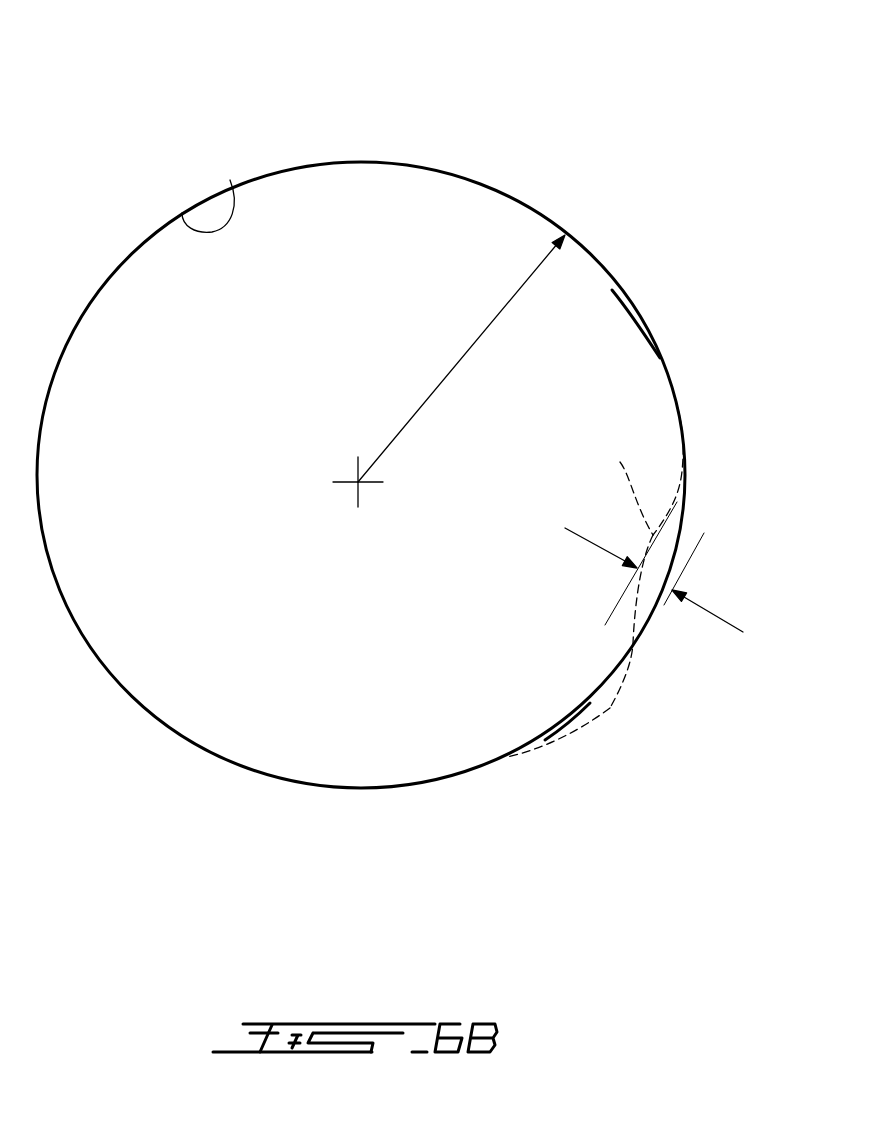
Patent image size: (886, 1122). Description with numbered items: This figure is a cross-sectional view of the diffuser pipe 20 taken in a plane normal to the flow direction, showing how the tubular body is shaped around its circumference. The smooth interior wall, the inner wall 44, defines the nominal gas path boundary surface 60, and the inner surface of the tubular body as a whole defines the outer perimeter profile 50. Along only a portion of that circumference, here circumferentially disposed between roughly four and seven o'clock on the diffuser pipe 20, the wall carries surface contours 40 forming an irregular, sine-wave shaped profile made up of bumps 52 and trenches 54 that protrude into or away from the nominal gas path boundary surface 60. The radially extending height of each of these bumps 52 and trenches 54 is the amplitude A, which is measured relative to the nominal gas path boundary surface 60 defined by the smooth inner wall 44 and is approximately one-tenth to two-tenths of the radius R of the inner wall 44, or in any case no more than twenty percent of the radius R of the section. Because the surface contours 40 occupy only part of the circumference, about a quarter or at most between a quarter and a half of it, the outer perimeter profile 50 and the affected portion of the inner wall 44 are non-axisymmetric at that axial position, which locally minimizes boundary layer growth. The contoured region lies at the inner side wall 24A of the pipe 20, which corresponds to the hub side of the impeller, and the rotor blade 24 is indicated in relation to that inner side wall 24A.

The rotor blade 24 is at (361, 394).
The diffuser pipe 20 is at (313, 163).
The inner wall 44 is at (230, 180).
The radius R is at (472, 340).
The outer perimeter profile 50 is at (652, 333).
The inner side wall 24A is at (685, 457).
The bumps 52 is at (620, 462).
The surface contours 40 is at (632, 700).
The trenches 54 is at (610, 708).
The nominal gas path boundary surface 60 is at (578, 713).
The amplitude A is at (665, 576).